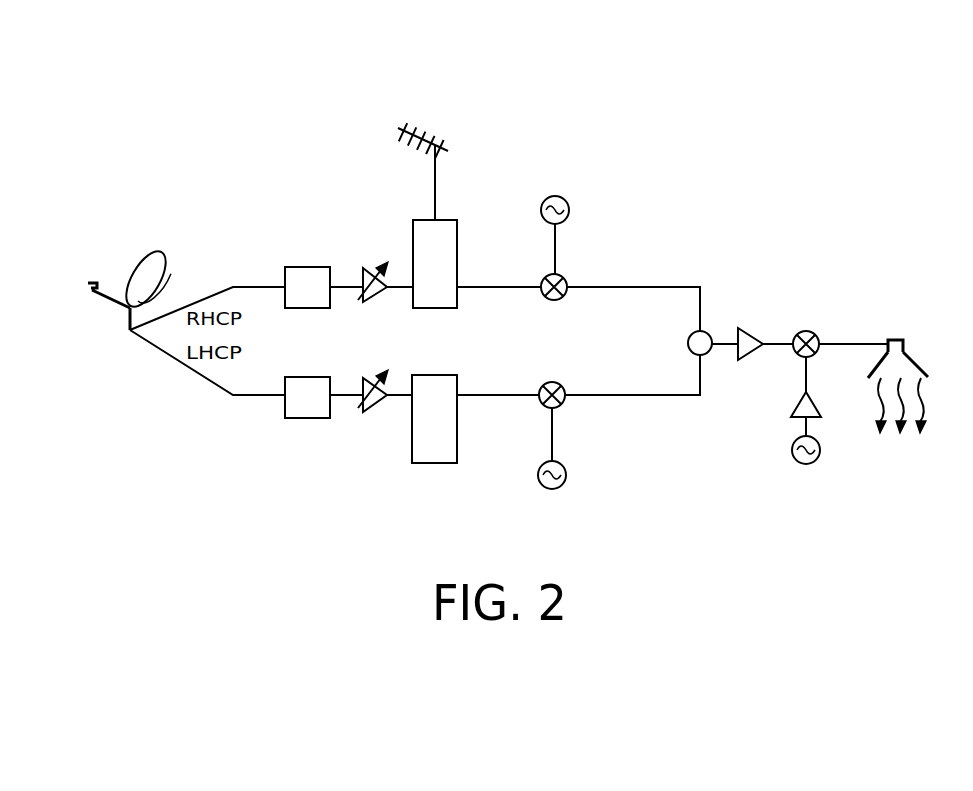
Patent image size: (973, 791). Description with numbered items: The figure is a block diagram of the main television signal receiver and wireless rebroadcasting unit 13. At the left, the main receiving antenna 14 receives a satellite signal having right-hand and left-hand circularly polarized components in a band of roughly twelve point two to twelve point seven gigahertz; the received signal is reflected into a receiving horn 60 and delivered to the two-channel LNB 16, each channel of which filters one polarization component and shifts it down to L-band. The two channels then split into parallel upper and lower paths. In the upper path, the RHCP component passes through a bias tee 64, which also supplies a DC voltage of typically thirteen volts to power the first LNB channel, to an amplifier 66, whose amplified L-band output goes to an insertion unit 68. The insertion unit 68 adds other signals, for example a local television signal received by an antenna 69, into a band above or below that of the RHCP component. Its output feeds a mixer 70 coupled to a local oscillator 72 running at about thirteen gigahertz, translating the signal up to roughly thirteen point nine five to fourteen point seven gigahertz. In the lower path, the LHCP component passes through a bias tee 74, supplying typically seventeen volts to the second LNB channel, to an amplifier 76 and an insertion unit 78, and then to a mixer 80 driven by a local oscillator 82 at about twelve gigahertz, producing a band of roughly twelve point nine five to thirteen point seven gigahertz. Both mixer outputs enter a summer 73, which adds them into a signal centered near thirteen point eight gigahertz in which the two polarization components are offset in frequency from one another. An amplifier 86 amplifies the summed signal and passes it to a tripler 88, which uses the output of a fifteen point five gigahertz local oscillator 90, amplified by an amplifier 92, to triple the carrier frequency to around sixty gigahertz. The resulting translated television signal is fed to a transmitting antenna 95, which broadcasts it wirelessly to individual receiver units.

The main television signal receiver and wireless rebroadcasting unit 13 is at (530, 101).
The main receiving antenna 14 is at (155, 250).
The two-channel LNB 16 is at (88, 293).
The receiving horn 60 is at (97, 287).
The bias tee 64 is at (293, 267).
The amplifier 66 is at (373, 270).
The insertion unit 68 is at (458, 218).
The antenna 69 is at (426, 123).
The mixer 70 is at (564, 277).
The local oscillator 72 is at (565, 196).
The summer 73 is at (706, 329).
The bias tee 74 is at (300, 418).
The amplifier 76 is at (377, 410).
The insertion unit 78 is at (455, 375).
The mixer 80 is at (566, 379).
The local oscillator 82 is at (565, 483).
The amplifier 86 is at (757, 331).
The tripler 88 is at (810, 333).
The local oscillator 90 is at (798, 463).
The amplifier 92 is at (795, 407).
The transmitting antenna 95 is at (922, 363).